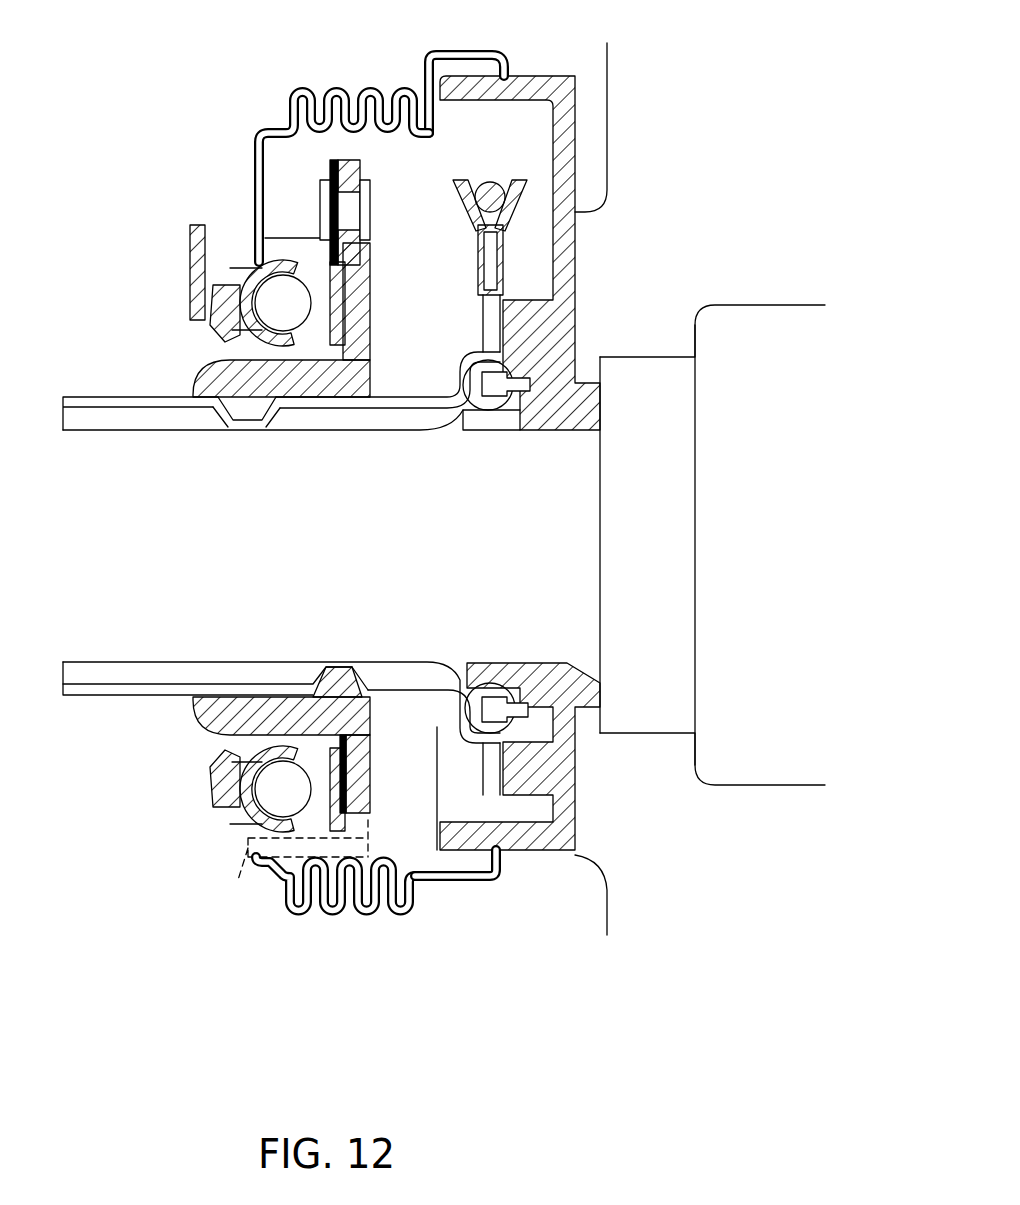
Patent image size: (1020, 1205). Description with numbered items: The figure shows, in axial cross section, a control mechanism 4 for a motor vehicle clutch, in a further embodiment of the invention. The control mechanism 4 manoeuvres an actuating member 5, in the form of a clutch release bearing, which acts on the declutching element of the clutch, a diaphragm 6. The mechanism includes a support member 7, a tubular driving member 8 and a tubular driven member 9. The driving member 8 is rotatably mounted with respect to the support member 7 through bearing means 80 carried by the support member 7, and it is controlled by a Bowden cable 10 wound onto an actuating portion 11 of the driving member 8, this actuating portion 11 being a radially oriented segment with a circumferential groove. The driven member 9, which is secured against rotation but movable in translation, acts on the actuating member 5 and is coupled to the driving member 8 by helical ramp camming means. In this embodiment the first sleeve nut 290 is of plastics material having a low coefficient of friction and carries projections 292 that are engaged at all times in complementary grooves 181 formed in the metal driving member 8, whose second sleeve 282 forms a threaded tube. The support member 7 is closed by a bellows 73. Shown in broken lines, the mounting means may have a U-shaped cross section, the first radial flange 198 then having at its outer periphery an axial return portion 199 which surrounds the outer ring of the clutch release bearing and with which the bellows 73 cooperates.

The control mechanism 4 is at (488, 885).
The actuating member 5 is at (238, 262).
The diaphragm 6 is at (186, 250).
The support member 7 is at (535, 73).
The tubular driving member 8 is at (117, 395).
The tubular driven member 9 is at (355, 818).
The Bowden cable 10 is at (492, 181).
The actuating portion 11 is at (505, 258).
The bellows 73 is at (303, 86).
The bearing means 80 is at (512, 728).
The complementary grooves 181 is at (230, 427).
The first radial flange 198 is at (368, 790).
The axial return portion 199 is at (293, 862).
The second sleeve 282 is at (83, 697).
The first sleeve nut 290 is at (195, 705).
The projections 292 is at (337, 680).